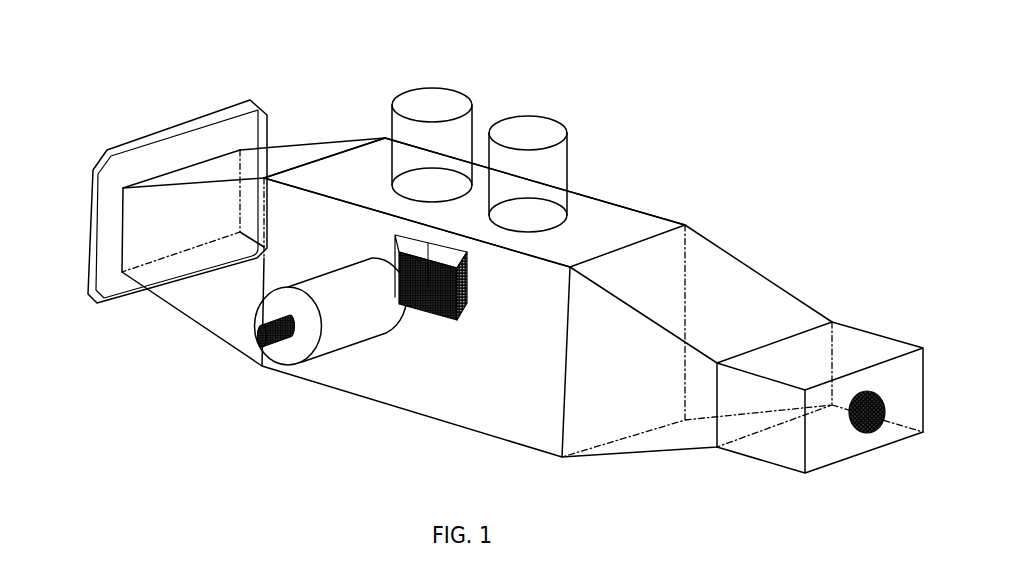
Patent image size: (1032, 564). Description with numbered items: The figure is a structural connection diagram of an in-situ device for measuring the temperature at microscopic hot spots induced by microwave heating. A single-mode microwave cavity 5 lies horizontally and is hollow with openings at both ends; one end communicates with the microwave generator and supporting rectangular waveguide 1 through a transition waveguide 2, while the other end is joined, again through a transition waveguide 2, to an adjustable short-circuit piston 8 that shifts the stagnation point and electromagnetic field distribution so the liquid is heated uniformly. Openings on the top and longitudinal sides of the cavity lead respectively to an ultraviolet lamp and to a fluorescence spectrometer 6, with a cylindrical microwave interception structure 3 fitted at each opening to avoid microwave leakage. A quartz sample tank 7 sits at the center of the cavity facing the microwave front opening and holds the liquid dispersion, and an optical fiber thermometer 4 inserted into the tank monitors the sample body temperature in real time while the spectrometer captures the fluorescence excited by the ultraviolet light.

The microwave generator and supporting rectangular waveguide 1 is at (130, 141).
The transition waveguide 2 is at (313, 152).
The cylindrical microwave interception structure 3 is at (350, 290).
The optical fiber thermometer 4 is at (522, 260).
The single-mode microwave cavity 5 is at (612, 228).
The fluorescence spectrometer 6 is at (260, 345).
The quartz sample tank 7 is at (452, 325).
The adjustable short-circuit piston 8 is at (780, 442).